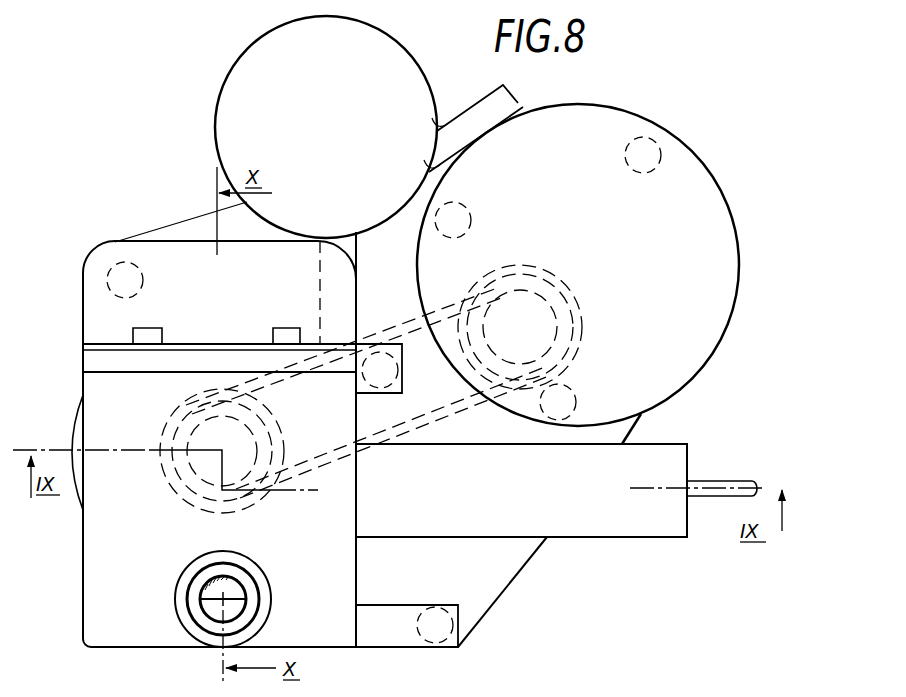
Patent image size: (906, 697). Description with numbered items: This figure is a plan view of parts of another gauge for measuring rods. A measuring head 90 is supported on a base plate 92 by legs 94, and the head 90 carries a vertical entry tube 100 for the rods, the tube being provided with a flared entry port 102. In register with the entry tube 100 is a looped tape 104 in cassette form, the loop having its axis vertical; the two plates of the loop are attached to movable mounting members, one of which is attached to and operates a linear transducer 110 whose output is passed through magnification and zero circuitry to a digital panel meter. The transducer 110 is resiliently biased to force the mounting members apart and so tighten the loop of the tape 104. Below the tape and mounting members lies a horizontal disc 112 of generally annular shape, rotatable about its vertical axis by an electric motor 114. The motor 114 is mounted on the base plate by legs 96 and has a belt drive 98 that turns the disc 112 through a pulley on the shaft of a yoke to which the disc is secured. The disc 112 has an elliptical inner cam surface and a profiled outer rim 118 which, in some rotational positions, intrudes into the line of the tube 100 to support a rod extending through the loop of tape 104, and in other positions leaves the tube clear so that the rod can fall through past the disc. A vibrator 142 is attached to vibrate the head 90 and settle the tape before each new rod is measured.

The measuring head 90 is at (97, 541).
The base plate 92 is at (191, 228).
The legs 94 is at (125, 262).
The legs 96 is at (658, 140).
The belt drive 98 is at (440, 413).
The vertical entry tube 100 is at (237, 607).
The flared entry port 102 is at (182, 609).
The looped tape 104 is at (238, 595).
The linear transducer 110 is at (528, 502).
The horizontal disc 112 is at (78, 419).
The electric motor 114 is at (707, 197).
The profiled outer rim 118 is at (78, 497).
The vibrator 142 is at (242, 71).